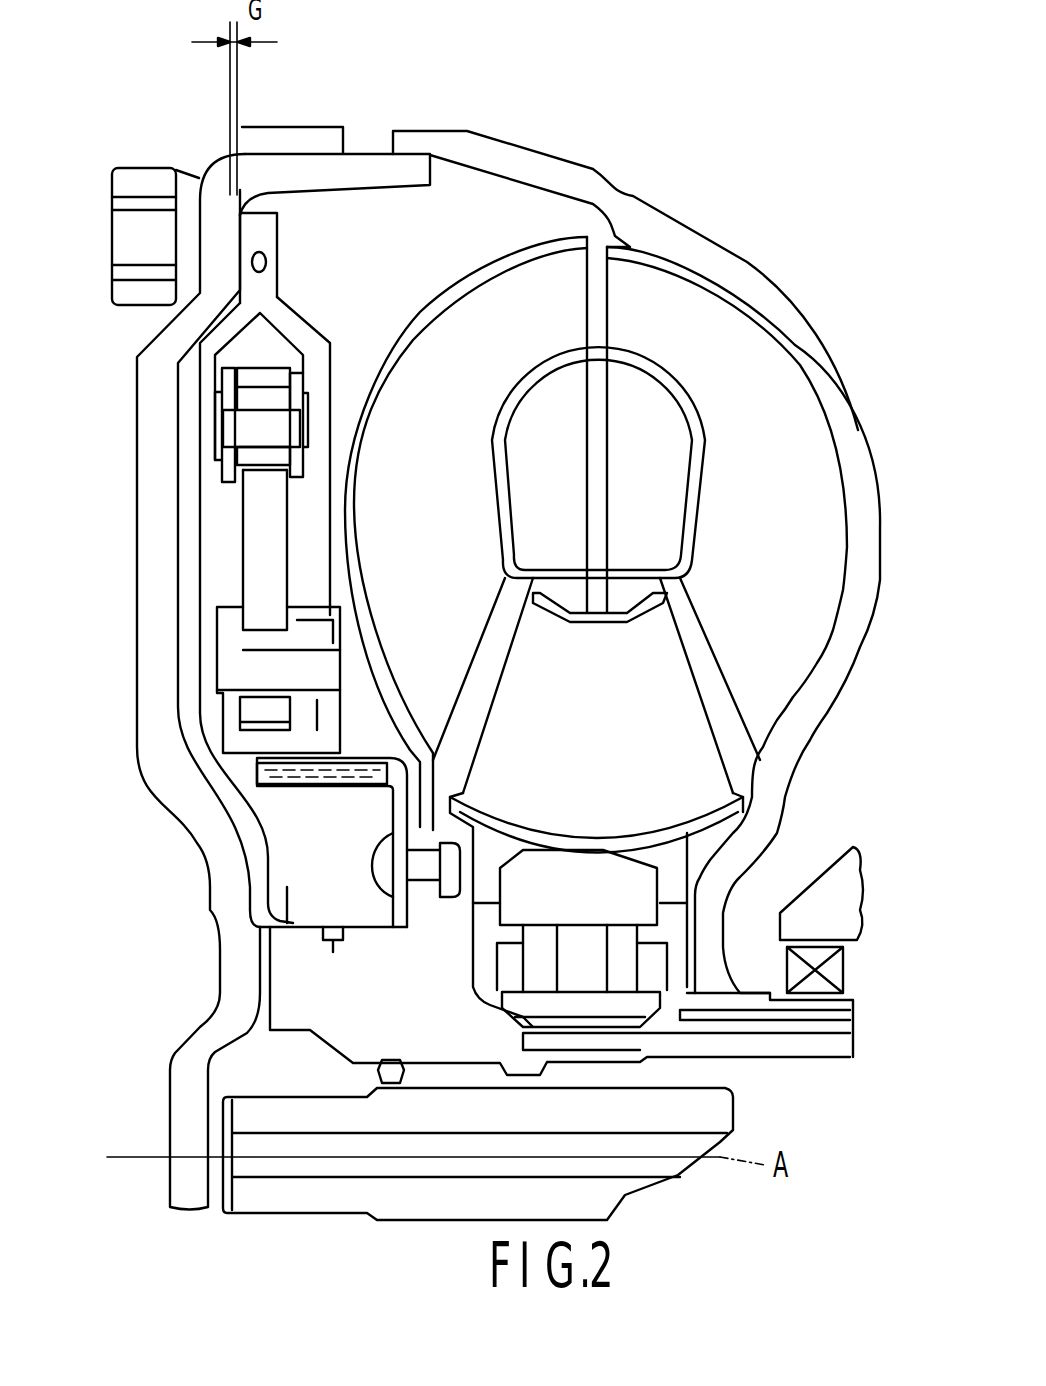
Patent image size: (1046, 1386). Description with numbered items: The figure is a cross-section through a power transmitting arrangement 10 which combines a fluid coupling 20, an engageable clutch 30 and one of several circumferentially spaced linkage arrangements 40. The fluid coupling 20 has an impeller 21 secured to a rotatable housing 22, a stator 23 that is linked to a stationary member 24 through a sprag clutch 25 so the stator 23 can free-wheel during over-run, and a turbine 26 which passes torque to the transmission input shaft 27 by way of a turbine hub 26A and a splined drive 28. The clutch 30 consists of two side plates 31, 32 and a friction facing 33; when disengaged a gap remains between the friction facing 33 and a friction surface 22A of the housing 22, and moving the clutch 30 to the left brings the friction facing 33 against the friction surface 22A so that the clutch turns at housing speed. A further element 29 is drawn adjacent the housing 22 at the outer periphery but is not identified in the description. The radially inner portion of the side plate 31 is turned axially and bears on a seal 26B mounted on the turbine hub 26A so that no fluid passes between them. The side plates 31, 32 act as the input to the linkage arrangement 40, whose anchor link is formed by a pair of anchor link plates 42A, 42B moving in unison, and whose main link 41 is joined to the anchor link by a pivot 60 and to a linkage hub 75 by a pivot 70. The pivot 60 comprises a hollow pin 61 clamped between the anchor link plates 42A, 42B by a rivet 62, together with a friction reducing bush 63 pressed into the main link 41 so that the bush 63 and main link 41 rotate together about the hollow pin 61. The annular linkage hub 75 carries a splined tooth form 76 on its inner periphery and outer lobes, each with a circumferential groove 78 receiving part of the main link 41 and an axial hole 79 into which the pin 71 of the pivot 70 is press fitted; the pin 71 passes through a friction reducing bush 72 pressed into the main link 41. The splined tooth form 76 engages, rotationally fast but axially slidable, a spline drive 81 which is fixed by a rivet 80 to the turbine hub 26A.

The power transmitting arrangement 10 is at (602, 164).
The fluid coupling 20 is at (755, 292).
The impeller 21 is at (767, 497).
The rotatable housing 22 is at (473, 150).
The friction surface 22A is at (240, 300).
The stator 23 is at (613, 747).
The stationary member 24 is at (840, 1048).
The sprag clutch 25 is at (593, 970).
The turbine 26 is at (440, 494).
The turbine hub 26A is at (413, 1037).
The seal 26B is at (333, 952).
The transmission input shaft 27 is at (740, 1065).
The splined drive 28 is at (397, 1080).
The nut 29 is at (118, 226).
The clutch 30 is at (282, 240).
The side plate 31 is at (190, 483).
The side plate 32 is at (273, 287).
The friction facing 33 is at (243, 230).
The linkage arrangement 40 is at (216, 489).
The main link 41 is at (283, 604).
The anchor link plate 42A is at (297, 380).
The anchor link plate 42B is at (223, 388).
The pivot 60 is at (260, 487).
The hollow pin 61 is at (283, 398).
The rivet 62 is at (237, 428).
The friction reducing bush 63 is at (272, 468).
The pivot 70 is at (213, 644).
The pin 71 is at (300, 668).
The friction reducing bush 72 is at (283, 628).
The linkage hub 75 is at (313, 700).
The splined tooth form 76 is at (250, 762).
The circumferential groove 78 is at (248, 725).
The axial hole 79 is at (225, 678).
The rivet 80 is at (375, 870).
The spline drive 81 is at (305, 775).